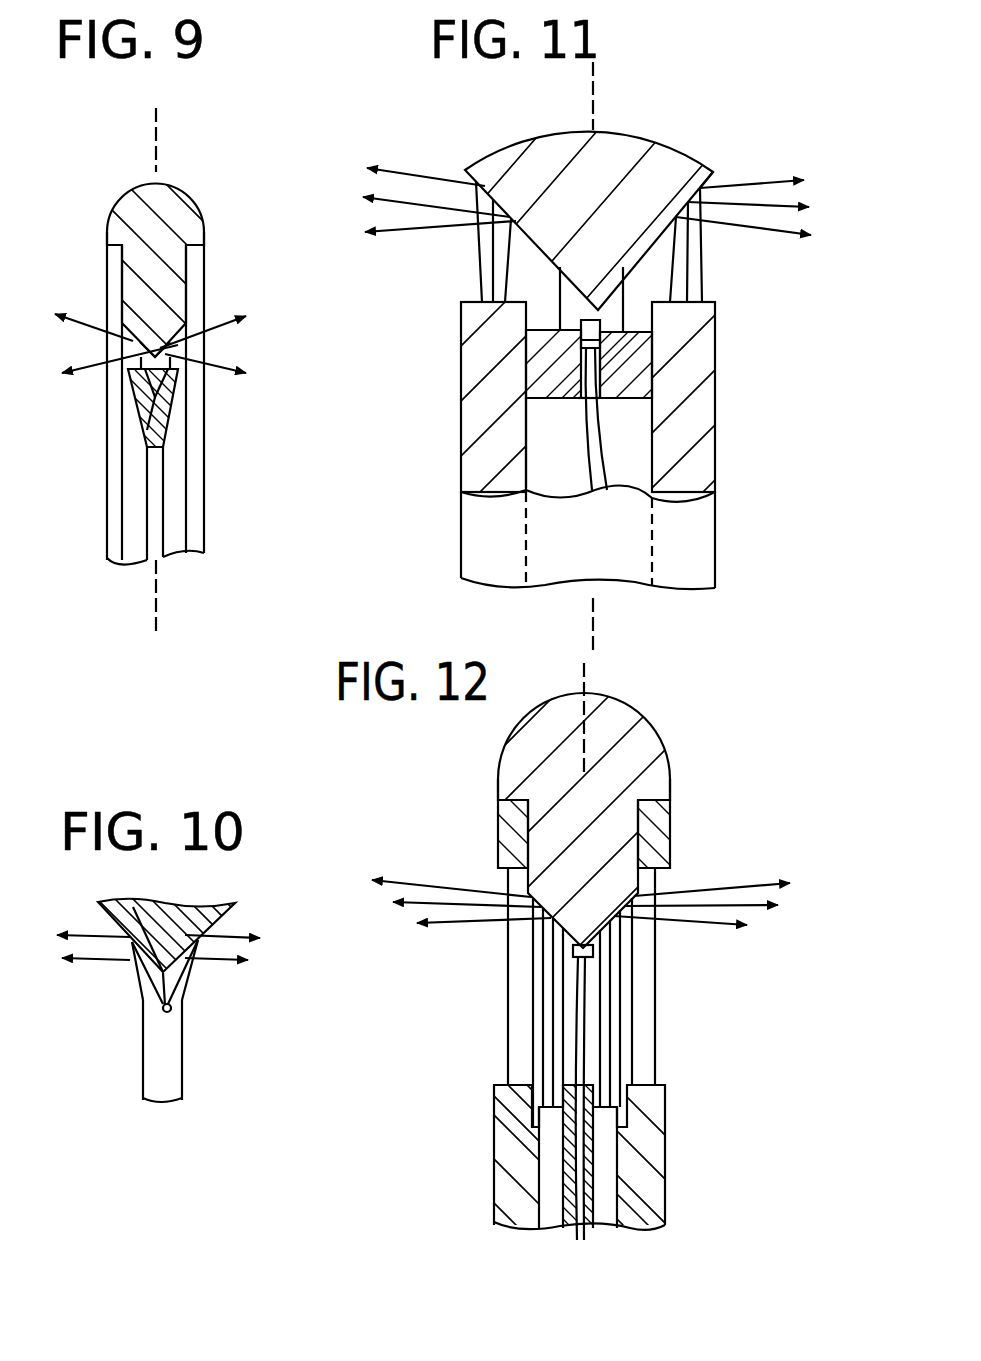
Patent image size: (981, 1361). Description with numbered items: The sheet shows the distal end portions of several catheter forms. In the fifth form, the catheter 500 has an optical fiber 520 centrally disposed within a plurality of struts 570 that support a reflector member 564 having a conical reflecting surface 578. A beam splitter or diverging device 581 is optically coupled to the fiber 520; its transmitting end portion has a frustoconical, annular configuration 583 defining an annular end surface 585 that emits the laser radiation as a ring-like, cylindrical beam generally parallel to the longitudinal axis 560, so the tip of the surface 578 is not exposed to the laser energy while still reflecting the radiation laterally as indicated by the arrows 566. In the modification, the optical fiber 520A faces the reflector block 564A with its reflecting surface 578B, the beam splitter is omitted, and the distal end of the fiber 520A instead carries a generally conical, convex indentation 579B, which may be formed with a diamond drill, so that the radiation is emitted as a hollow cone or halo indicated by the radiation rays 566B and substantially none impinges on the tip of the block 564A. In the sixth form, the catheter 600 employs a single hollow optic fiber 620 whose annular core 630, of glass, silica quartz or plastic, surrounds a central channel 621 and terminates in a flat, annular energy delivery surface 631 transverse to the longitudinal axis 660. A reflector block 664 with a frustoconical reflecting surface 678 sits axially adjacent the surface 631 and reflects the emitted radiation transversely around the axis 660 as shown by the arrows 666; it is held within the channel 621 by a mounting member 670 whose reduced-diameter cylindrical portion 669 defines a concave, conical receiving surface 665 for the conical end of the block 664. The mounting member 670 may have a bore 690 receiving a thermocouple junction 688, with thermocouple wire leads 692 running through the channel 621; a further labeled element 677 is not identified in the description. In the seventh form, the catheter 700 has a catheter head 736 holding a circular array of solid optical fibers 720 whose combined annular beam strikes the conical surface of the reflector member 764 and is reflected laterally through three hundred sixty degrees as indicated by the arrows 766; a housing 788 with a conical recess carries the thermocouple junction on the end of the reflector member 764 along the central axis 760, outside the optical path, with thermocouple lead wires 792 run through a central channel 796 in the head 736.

In FIG. 9, the catheter 500 is at (86, 432).
In FIG. 9, the optical fiber 520 is at (138, 548).
In FIG. 9, the longitudinal axis 560 is at (158, 141).
In FIG. 9, the reflector member 564 is at (215, 207).
In FIG. 9, the arrows 566 is at (226, 318).
In FIG. 9, the struts 570 is at (110, 516).
In FIG. 9, the conical reflecting surface 578 is at (133, 341).
In FIG. 9, the beam splitter or diverging device 581 is at (138, 420).
In FIG. 9, the frustoconical annular configuration 583 is at (165, 386).
In FIG. 9, the annular end surface 585 is at (135, 372).
In FIG. 10, the reflector block 564A is at (190, 905).
In FIG. 10, the reflecting surface 578B is at (98, 915).
In FIG. 10, the radiation rays 566B is at (118, 962).
In FIG. 10, the conical convex indentation 579B is at (176, 1011).
In FIG. 10, the optical fiber 520A is at (140, 1047).
In FIG. 11, the catheter 600 is at (432, 273).
In FIG. 11, the hollow optic fiber 620 is at (460, 365).
In FIG. 11, the central channel 621 is at (525, 447).
In FIG. 11, the annular core 630 is at (485, 463).
In FIG. 11, the energy delivery surface 631 is at (697, 302).
In FIG. 11, the longitudinal axis 660 is at (594, 97).
In FIG. 11, the reflector block 664 is at (512, 137).
In FIG. 11, the concave conical receiving surface 665 is at (602, 292).
In FIG. 11, the arrows 666 is at (386, 232).
In FIG. 11, the reduced diameter cylindrical portion 669 is at (598, 288).
In FIG. 11, the mounting member 670 is at (657, 352).
In FIG. 11, the fiber channel 677 is at (633, 373).
In FIG. 11, the conical reflecting surface 678 is at (703, 170).
In FIG. 11, the thermocouple junction 688 is at (580, 328).
In FIG. 11, the bore 690 is at (583, 394).
In FIG. 11, the thermocouple wire leads 692 is at (592, 490).
In FIG. 12, the catheter 700 is at (462, 1000).
In FIG. 12, the solid optical fibers 720 is at (554, 1226).
In FIG. 12, the catheter head 736 is at (492, 1128).
In FIG. 12, the central axis 760 is at (586, 753).
In FIG. 12, the reflector member 764 is at (670, 790).
In FIG. 12, the arrows 766 is at (752, 886).
In FIG. 12, the housing 788 is at (596, 950).
In FIG. 12, the thermocouple lead wires 792 is at (583, 1240).
In FIG. 12, the central channel 796 is at (574, 1242).